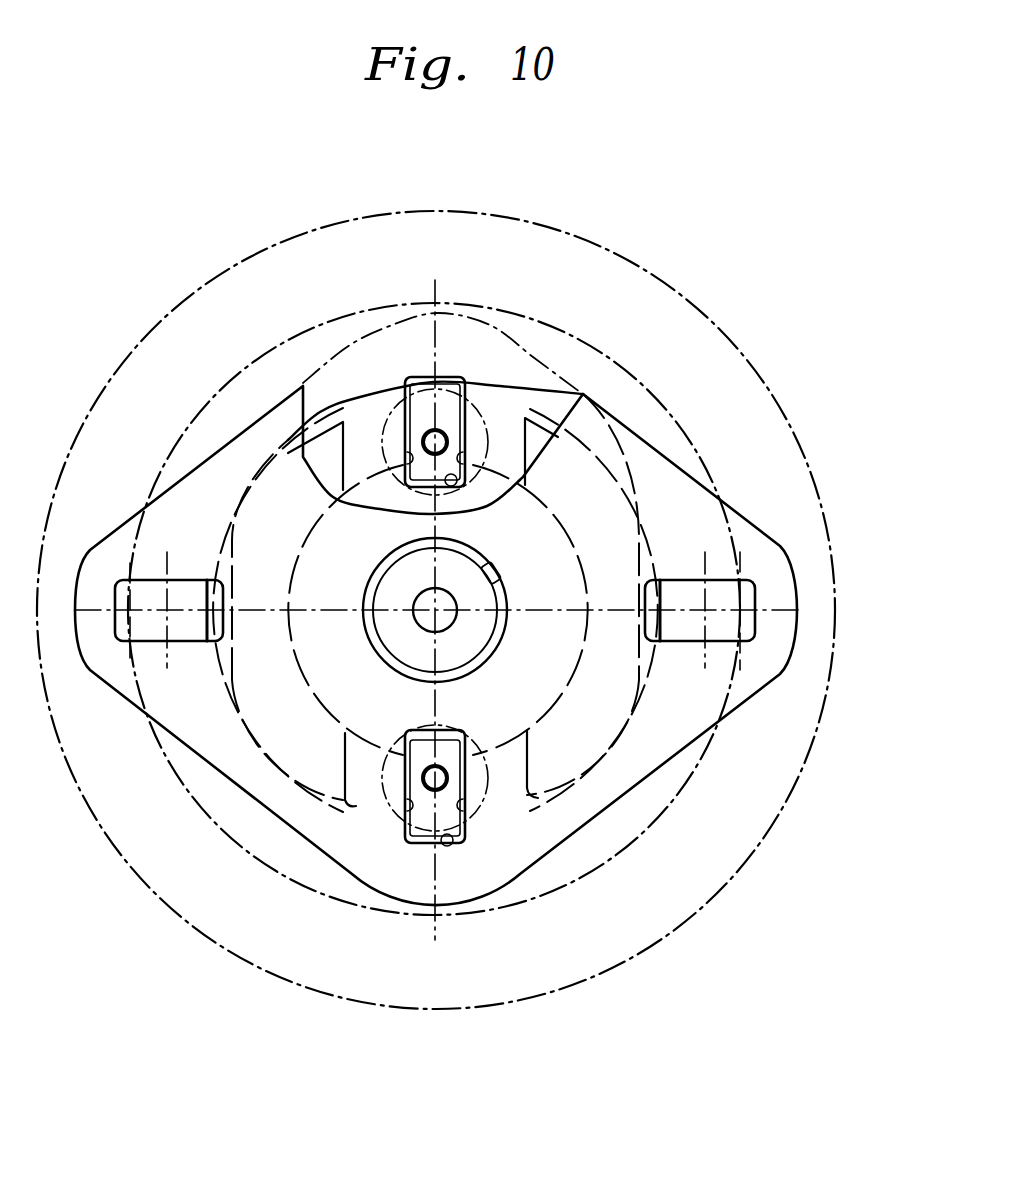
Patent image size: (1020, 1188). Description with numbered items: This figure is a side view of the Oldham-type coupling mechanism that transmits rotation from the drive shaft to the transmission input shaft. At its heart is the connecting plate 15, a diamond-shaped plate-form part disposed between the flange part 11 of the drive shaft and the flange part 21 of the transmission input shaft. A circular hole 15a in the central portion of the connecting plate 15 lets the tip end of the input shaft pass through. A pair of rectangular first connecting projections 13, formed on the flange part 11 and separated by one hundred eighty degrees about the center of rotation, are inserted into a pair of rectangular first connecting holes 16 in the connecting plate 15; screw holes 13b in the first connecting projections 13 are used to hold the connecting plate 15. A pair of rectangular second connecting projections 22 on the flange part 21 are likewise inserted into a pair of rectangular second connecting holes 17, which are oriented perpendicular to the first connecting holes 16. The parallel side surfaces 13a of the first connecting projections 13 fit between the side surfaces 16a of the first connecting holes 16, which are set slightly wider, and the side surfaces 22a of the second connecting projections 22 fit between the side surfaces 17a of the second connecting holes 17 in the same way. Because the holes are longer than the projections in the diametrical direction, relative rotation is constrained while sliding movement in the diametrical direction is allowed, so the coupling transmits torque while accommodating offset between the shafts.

The flange part 11 is at (648, 370).
The first connecting projections 13 is at (453, 408).
The side surfaces 13a is at (470, 432).
The screw holes 13b is at (468, 403).
The connecting plate 15 is at (651, 770).
The circular hole 15a is at (494, 578).
The first connecting holes 16 is at (455, 483).
The side surfaces 16a is at (467, 463).
The second connecting holes 17 is at (130, 620).
The side surfaces 17a is at (135, 588).
The flange part 21 is at (712, 290).
The second connecting projections 22 is at (187, 597).
The side surfaces 22a is at (173, 587).